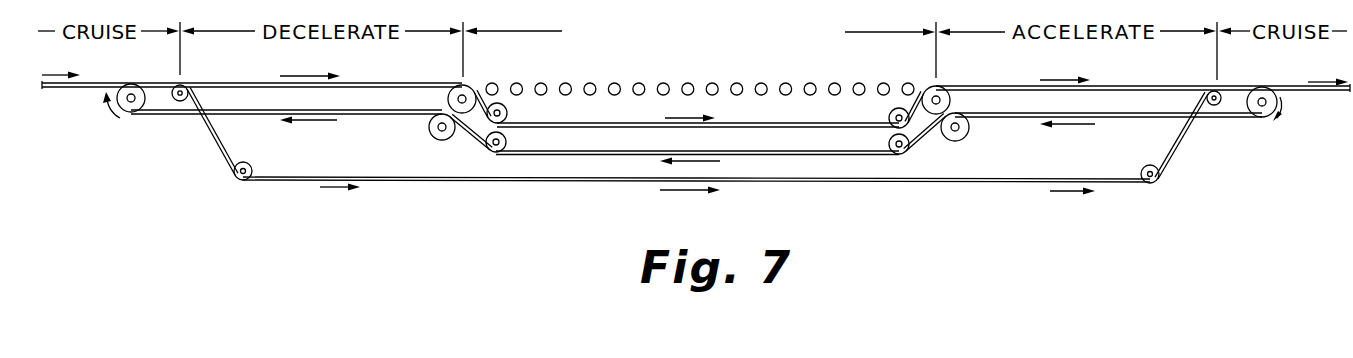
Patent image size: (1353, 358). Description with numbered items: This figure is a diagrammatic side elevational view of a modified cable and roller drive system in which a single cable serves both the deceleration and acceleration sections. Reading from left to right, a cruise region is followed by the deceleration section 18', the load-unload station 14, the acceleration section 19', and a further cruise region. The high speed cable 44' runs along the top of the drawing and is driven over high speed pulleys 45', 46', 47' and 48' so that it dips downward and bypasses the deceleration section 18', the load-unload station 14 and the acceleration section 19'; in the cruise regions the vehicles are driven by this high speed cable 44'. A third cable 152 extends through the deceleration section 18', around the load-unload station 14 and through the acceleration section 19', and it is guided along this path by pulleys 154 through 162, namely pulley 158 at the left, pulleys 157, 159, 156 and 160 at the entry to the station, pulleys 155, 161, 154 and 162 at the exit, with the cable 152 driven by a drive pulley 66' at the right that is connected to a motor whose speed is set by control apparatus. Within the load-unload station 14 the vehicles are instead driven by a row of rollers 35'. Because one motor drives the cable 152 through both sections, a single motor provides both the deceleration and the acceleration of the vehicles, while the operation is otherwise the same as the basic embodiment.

The load-unload station 14 is at (832, 25).
The high speed cable 44' is at (1282, 69).
The deceleration section 18' is at (415, 153).
The acceleration section 19' is at (954, 162).
The high speed pulley 45' is at (172, 120).
The high speed pulley 46' is at (266, 161).
The high speed pulley 47' is at (1132, 158).
The high speed pulley 48' is at (1234, 75).
The drive pulley 66' is at (1261, 122).
The rollers 35' is at (700, 70).
The third cable 152 is at (400, 116).
The pulley 154 is at (950, 96).
The pulley 155 is at (889, 113).
The pulley 156 is at (507, 113).
The pulley 157 is at (470, 88).
The pulley 158 is at (131, 113).
The pulley 159 is at (445, 139).
The pulley 160 is at (507, 141).
The pulley 161 is at (889, 143).
The pulley 162 is at (968, 134).